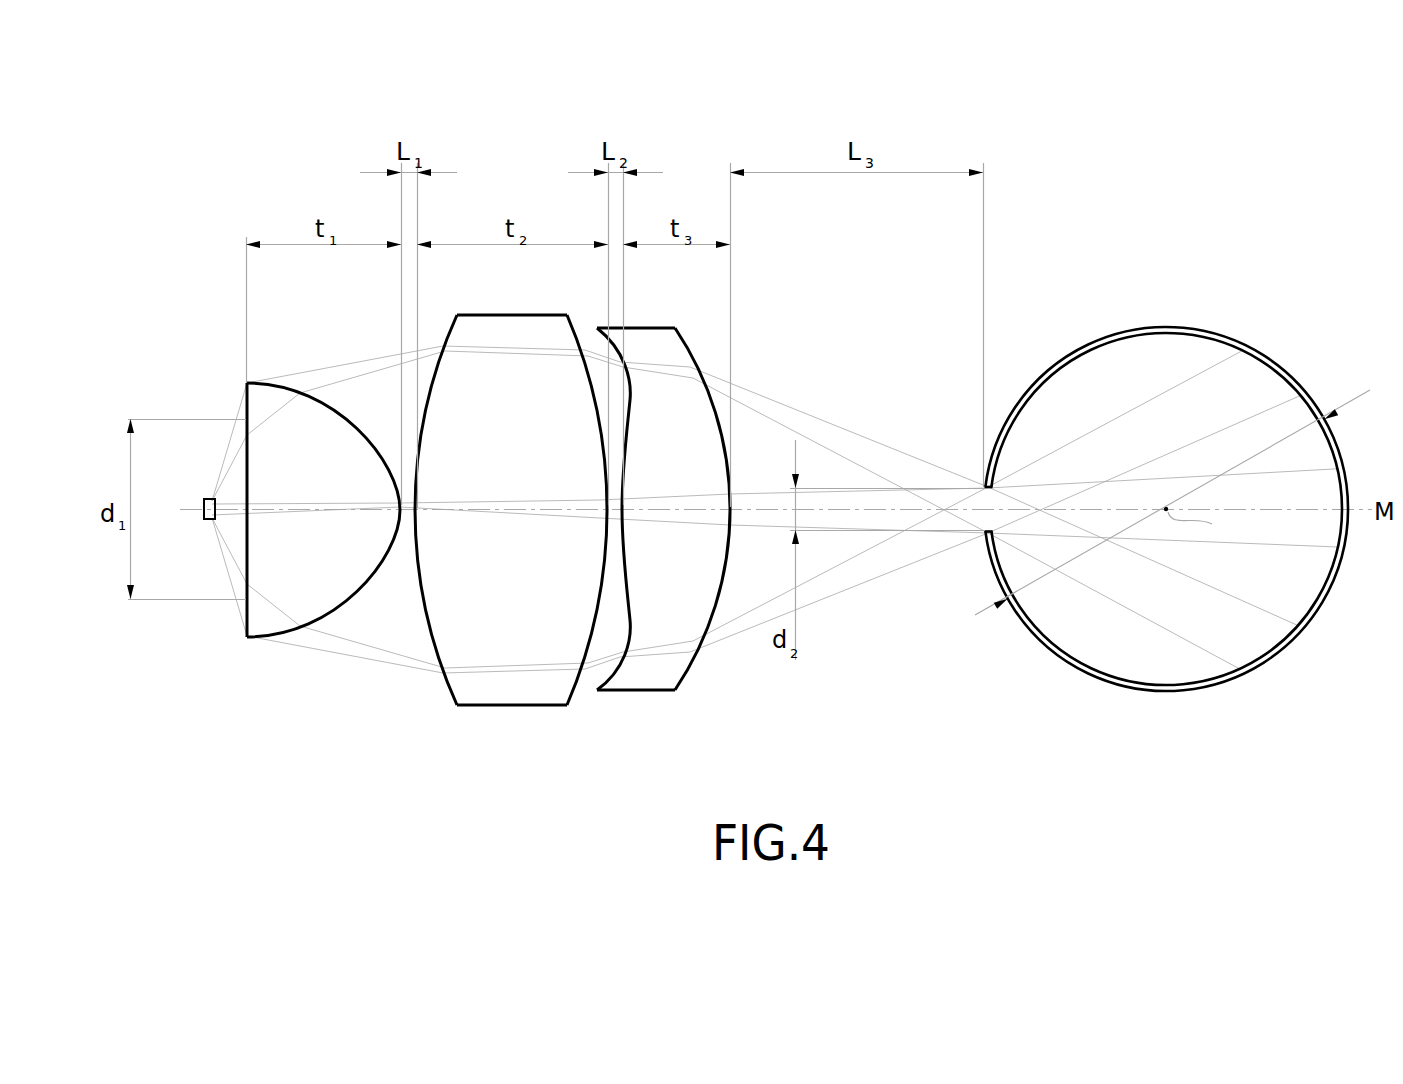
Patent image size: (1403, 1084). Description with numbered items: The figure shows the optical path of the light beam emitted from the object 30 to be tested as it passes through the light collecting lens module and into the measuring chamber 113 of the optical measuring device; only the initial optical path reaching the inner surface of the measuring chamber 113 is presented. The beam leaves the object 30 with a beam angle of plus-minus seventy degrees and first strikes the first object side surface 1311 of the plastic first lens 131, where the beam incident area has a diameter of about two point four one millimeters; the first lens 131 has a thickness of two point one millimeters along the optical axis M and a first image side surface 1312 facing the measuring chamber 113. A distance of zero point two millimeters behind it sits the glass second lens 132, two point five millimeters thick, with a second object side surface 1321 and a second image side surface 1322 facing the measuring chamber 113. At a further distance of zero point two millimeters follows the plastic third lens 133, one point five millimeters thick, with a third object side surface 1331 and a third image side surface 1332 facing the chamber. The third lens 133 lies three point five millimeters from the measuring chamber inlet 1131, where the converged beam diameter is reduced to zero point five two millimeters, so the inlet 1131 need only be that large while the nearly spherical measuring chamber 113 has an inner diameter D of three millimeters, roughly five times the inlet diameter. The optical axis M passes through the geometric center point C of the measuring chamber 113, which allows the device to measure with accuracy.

The object 30 is at (213, 521).
The first lens 131 is at (302, 549).
The first object side surface 1311 is at (246, 616).
The first image side surface 1312 is at (336, 616).
The second lens 132 is at (511, 546).
The second object side surface 1321 is at (438, 690).
The second image side surface 1322 is at (578, 690).
The third lens 133 is at (657, 577).
The third object side surface 1331 is at (587, 678).
The third image side surface 1332 is at (690, 679).
The measuring chamber 113 is at (1130, 530).
The measuring chamber inlet 1131 is at (985, 534).